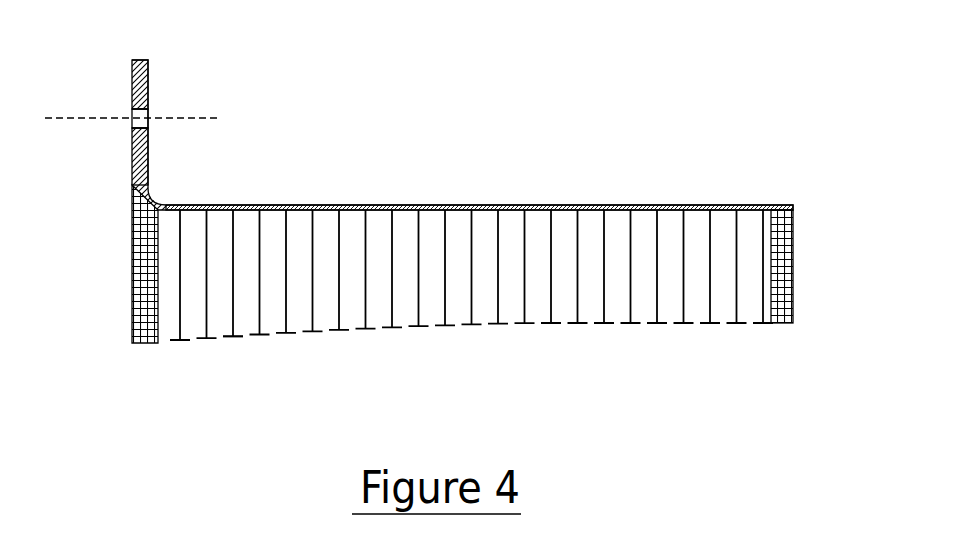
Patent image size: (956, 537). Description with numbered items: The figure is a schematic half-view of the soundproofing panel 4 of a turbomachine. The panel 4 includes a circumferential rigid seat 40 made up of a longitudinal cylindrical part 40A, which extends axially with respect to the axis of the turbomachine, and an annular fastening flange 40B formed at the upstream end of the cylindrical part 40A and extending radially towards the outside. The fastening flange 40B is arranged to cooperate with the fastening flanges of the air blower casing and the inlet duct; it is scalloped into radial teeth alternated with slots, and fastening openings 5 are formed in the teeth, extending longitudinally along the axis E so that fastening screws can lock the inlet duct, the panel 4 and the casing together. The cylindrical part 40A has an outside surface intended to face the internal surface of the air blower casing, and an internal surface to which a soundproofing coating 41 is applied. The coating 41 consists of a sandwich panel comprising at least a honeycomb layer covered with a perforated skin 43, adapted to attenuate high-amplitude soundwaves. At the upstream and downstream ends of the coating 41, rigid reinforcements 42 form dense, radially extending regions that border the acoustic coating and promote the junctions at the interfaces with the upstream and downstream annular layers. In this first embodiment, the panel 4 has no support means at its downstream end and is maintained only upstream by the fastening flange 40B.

The soundproofing panel 4 is at (258, 73).
The circumferential rigid seat 40 is at (450, 209).
The longitudinal cylindrical part 40A is at (629, 205).
The annular fastening flange 40B is at (145, 60).
The soundproofing coating 41 is at (458, 308).
The rigid reinforcements 42 is at (143, 341).
The perforated skin 43 is at (234, 338).
The fastening openings 5 is at (132, 142).
The axis E is at (62, 118).